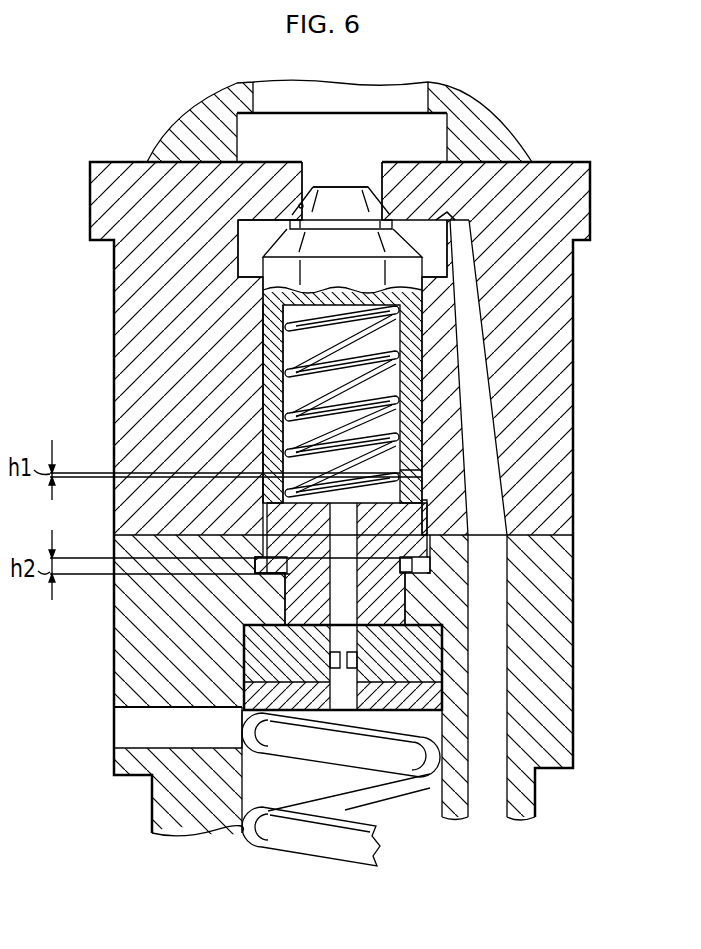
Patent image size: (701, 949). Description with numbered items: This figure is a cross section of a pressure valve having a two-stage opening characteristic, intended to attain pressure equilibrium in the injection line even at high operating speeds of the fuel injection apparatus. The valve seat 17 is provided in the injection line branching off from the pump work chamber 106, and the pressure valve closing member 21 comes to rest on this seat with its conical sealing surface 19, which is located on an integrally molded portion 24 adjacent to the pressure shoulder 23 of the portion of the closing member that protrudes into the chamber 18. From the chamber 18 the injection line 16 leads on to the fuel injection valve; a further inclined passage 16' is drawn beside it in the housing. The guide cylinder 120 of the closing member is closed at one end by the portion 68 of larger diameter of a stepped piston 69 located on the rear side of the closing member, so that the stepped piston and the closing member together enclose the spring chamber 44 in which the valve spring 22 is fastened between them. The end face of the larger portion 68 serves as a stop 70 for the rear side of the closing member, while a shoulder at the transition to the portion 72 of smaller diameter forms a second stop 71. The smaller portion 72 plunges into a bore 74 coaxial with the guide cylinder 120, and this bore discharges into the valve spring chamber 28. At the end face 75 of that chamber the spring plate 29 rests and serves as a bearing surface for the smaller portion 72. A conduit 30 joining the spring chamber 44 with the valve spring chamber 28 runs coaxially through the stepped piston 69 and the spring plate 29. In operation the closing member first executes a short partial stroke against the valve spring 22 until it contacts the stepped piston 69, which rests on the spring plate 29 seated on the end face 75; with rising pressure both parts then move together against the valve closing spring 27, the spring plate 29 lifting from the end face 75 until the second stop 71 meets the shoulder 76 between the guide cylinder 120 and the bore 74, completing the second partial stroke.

The pump work chamber 106 is at (398, 128).
The pressure shoulder 23 is at (299, 204).
The valve seat 17 is at (300, 204).
The integrally molded portion 24 is at (318, 186).
The injection line 16 is at (342, 209).
The inclined bore 16' is at (535, 377).
The sealing surface 19 is at (383, 192).
The chamber 18 is at (243, 250).
The pressure valve closing member 21 is at (262, 284).
The valve spring 22 is at (263, 360).
The guide cylinder 120 is at (263, 370).
The spring chamber 44 is at (263, 407).
The stepped piston 69 is at (258, 531).
The stop 70 is at (416, 461).
The portion of larger diameter 68 is at (415, 528).
The second stop 71 is at (406, 566).
The portion of smaller diameter 72 is at (280, 588).
The bore 74 is at (283, 612).
The shoulder 76 is at (428, 568).
The end face 75 is at (410, 641).
The conduit 30 is at (374, 654).
The spring plate 29 is at (259, 673).
The valve spring chamber 28 is at (422, 805).
The valve closing spring 27 is at (305, 837).